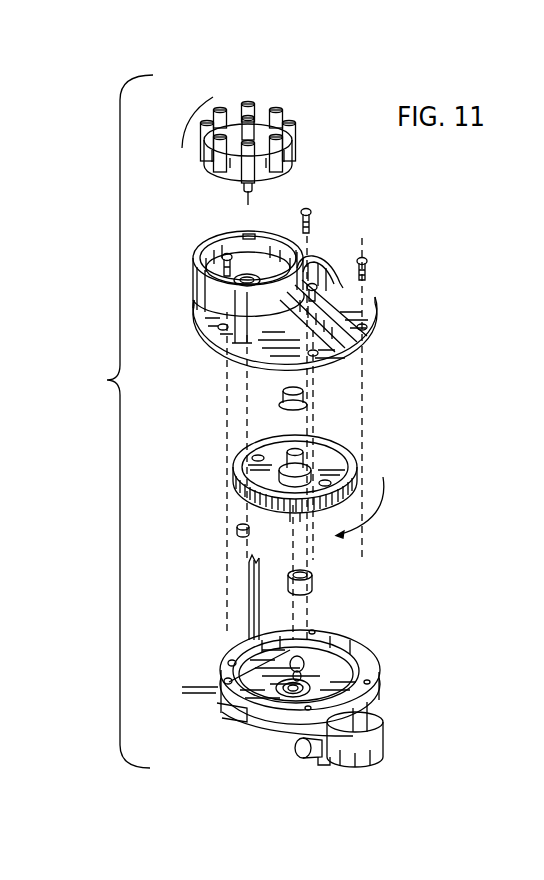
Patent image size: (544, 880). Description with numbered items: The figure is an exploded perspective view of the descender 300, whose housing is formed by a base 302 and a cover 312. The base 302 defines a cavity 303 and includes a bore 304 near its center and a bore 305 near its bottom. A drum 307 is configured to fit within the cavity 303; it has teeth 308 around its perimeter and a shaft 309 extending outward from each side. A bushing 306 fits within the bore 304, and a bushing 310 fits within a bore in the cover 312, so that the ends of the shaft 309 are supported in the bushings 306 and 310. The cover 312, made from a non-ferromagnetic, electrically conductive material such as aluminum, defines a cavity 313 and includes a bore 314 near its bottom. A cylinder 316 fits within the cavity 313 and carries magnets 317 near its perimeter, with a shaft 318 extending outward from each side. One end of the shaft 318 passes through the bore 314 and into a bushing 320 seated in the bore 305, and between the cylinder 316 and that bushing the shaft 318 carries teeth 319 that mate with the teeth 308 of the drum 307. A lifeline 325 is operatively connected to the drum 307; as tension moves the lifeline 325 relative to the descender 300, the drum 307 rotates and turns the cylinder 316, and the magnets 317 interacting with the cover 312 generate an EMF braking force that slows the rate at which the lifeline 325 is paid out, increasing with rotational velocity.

The descender 300 is at (104, 421).
The base 302 is at (295, 684).
The cavity 303 is at (324, 654).
The bore 304 is at (292, 692).
The bore 305 is at (228, 663).
The bushing 306 is at (310, 579).
The drum 307 is at (286, 456).
The teeth 308 is at (235, 483).
The shaft 309 is at (298, 456).
The bushing 310 is at (300, 392).
The cover 312 is at (311, 272).
The cavity 313 is at (292, 257).
The bore 314 is at (250, 274).
The cylinder 316 is at (249, 126).
The magnets 317 is at (268, 108).
The shaft 318 is at (250, 130).
The teeth 319 is at (245, 185).
The bushing 320 is at (240, 533).
The lifeline 325 is at (255, 584).